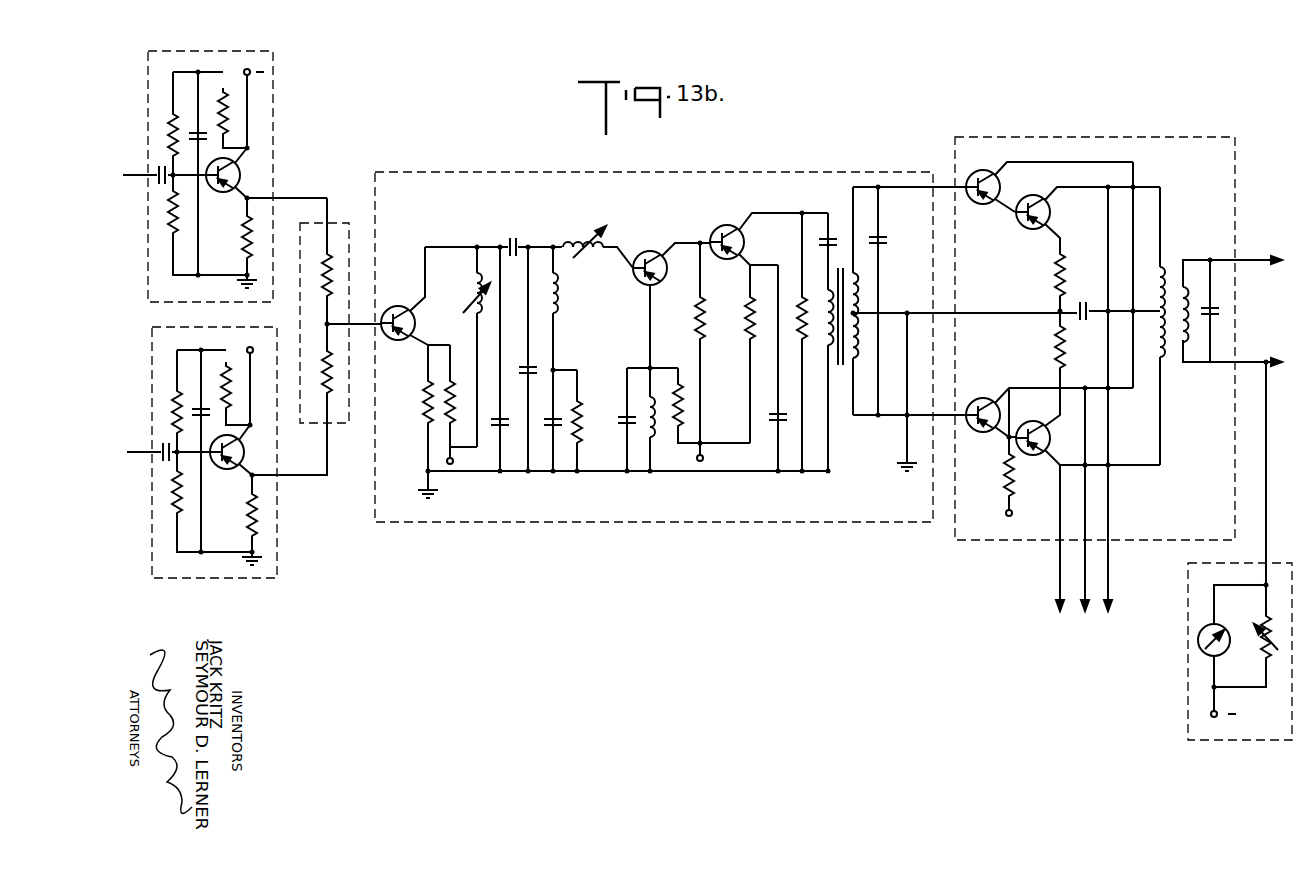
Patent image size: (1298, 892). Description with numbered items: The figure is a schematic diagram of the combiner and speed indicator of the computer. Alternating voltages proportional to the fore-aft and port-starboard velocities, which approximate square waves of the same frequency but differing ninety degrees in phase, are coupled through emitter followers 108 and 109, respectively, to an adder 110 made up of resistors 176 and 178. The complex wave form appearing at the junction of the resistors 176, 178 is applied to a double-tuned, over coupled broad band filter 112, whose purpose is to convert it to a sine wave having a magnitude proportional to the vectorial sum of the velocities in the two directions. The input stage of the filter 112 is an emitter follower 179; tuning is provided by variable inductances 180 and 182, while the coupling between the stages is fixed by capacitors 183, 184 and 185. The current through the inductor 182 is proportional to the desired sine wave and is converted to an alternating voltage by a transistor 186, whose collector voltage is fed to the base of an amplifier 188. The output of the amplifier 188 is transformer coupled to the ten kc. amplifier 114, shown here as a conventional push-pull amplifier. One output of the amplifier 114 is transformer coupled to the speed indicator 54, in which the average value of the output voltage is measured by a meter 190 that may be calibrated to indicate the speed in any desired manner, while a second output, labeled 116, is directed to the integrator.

The emitter follower 108 is at (273, 98).
The emitter follower 109 is at (278, 567).
The adder 110 is at (349, 226).
The double-tuned bandpass filter 112 is at (815, 523).
The ten kc. amplifier 114 is at (984, 137).
The integrator output 116 is at (1233, 311).
The resistor 176 is at (317, 286).
The resistor 178 is at (327, 398).
The emitter follower 179 is at (396, 304).
The variable inductance 180 is at (473, 273).
The variable inductance 182 is at (567, 243).
The capacitor 183 is at (507, 238).
The capacitor 184 is at (498, 428).
The capacitor 185 is at (533, 370).
The transistor 186 is at (653, 252).
The amplifier 188 is at (713, 226).
The meter 190 is at (1232, 623).
The speed indicator 54 is at (1190, 702).